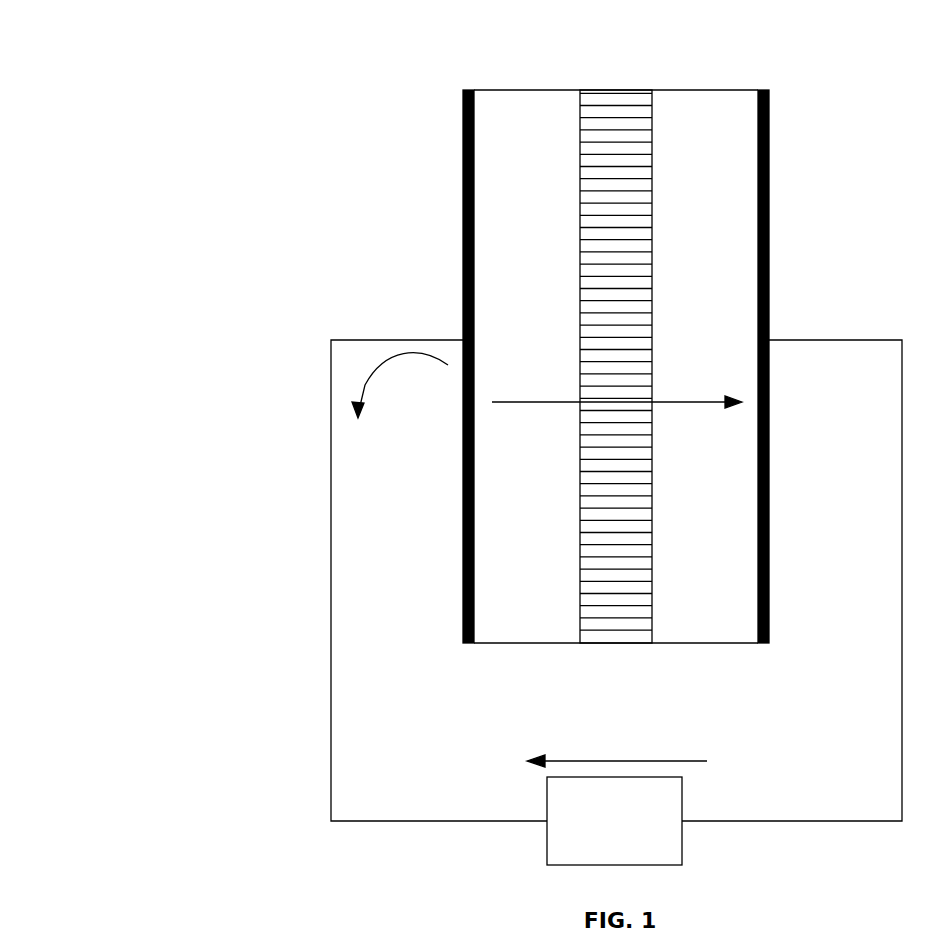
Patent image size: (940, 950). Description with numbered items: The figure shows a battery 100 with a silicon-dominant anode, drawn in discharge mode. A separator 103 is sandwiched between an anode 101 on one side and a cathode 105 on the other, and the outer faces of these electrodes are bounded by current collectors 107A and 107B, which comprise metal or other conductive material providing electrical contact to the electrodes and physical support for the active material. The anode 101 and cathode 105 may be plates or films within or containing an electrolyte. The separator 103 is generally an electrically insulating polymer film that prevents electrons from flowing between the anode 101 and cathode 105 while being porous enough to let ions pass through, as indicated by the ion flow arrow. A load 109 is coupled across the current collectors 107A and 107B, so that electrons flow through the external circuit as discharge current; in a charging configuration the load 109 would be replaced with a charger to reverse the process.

The battery 100 is at (157, 190).
The anode 101 is at (507, 303).
The separator 103 is at (620, 88).
The cathode 105 is at (688, 303).
The current collector 107A is at (462, 100).
The current collector 107B is at (770, 114).
The load 109 is at (596, 846).